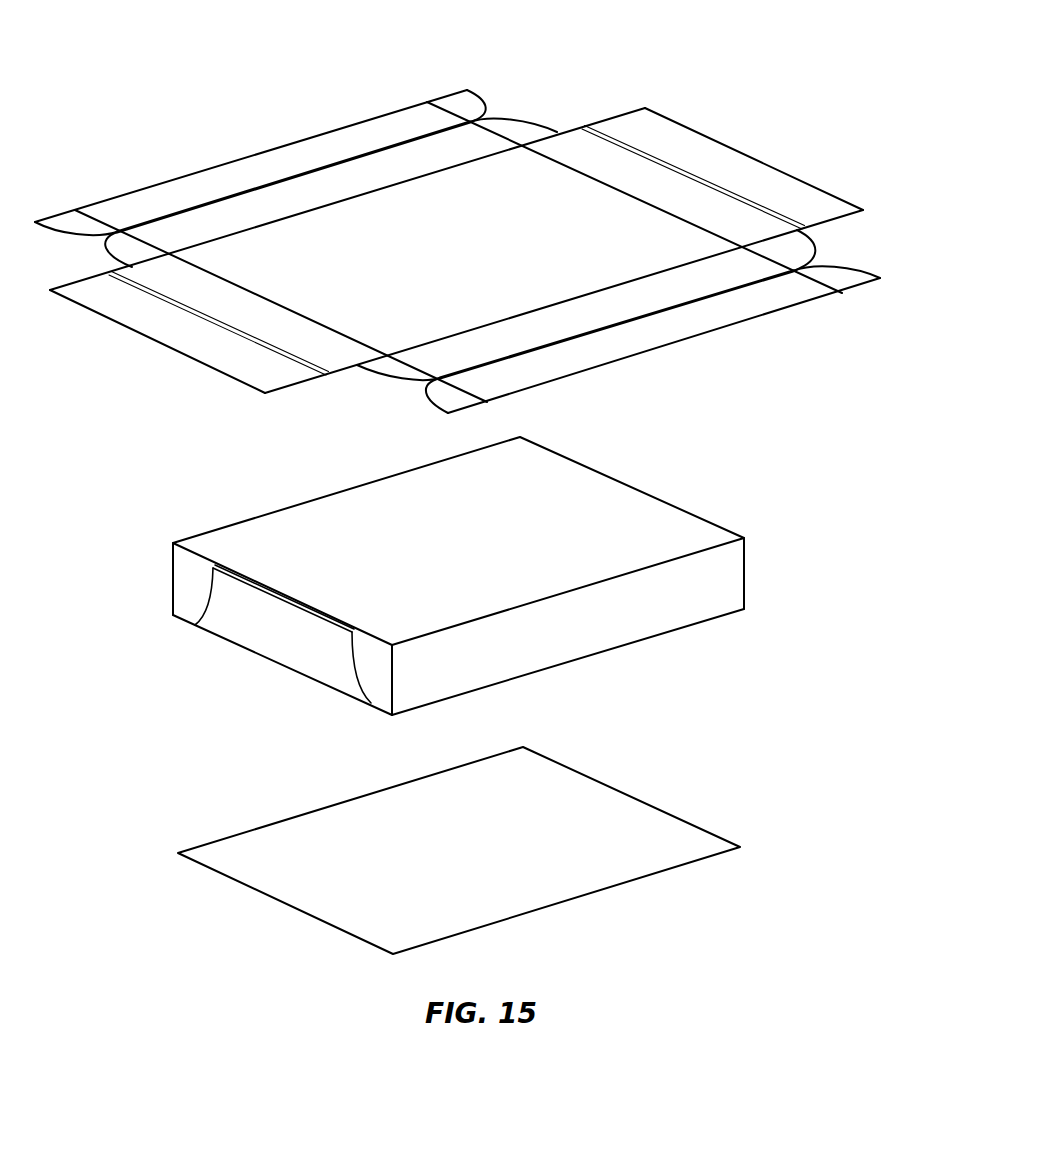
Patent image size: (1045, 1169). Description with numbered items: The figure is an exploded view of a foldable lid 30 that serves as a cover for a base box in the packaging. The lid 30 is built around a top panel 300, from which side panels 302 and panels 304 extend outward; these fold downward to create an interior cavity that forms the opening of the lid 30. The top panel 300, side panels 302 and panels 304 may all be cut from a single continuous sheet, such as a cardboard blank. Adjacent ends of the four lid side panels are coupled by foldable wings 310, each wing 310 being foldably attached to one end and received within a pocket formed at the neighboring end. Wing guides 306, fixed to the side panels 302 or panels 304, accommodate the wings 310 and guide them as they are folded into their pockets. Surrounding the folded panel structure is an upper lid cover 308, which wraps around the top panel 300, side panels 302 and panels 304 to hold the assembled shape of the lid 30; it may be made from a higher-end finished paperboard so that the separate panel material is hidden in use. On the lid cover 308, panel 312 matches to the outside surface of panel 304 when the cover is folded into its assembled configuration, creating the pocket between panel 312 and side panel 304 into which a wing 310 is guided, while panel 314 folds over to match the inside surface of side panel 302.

The lid 30 is at (121, 57).
The top panel 300 is at (248, 533).
The side panels 302 is at (188, 583).
The panels 304 is at (683, 608).
The wing guides 306 is at (293, 652).
The upper lid cover 308 is at (803, 103).
The foldable wings 310 is at (467, 97).
The panel 312 is at (207, 222).
The panel 314 is at (283, 152).